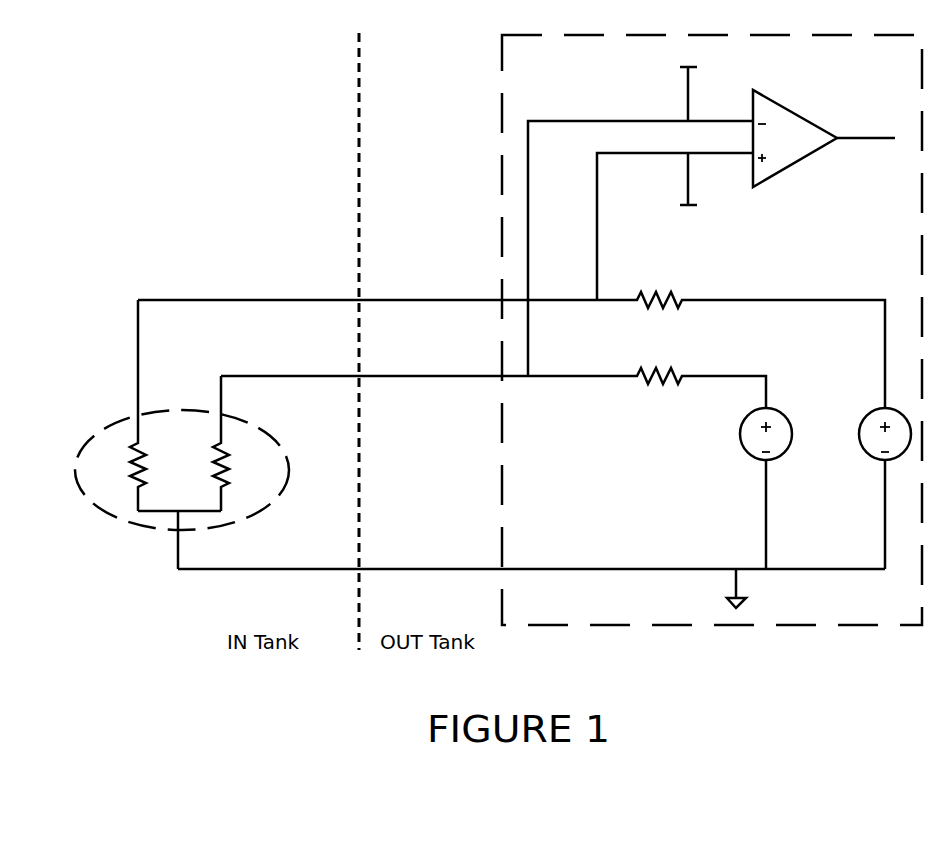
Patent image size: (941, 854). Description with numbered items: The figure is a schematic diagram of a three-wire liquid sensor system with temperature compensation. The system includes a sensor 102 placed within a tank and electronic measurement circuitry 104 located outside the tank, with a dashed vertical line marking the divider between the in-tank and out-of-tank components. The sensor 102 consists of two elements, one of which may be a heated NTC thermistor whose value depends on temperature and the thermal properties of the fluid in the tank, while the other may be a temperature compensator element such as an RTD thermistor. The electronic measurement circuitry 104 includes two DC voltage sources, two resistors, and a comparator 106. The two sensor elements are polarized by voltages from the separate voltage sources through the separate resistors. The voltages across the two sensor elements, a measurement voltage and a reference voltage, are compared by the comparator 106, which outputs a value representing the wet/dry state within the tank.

The sensor 102 is at (108, 515).
The electronic measurement circuitry 104 is at (873, 627).
The comparator 106 is at (802, 113).